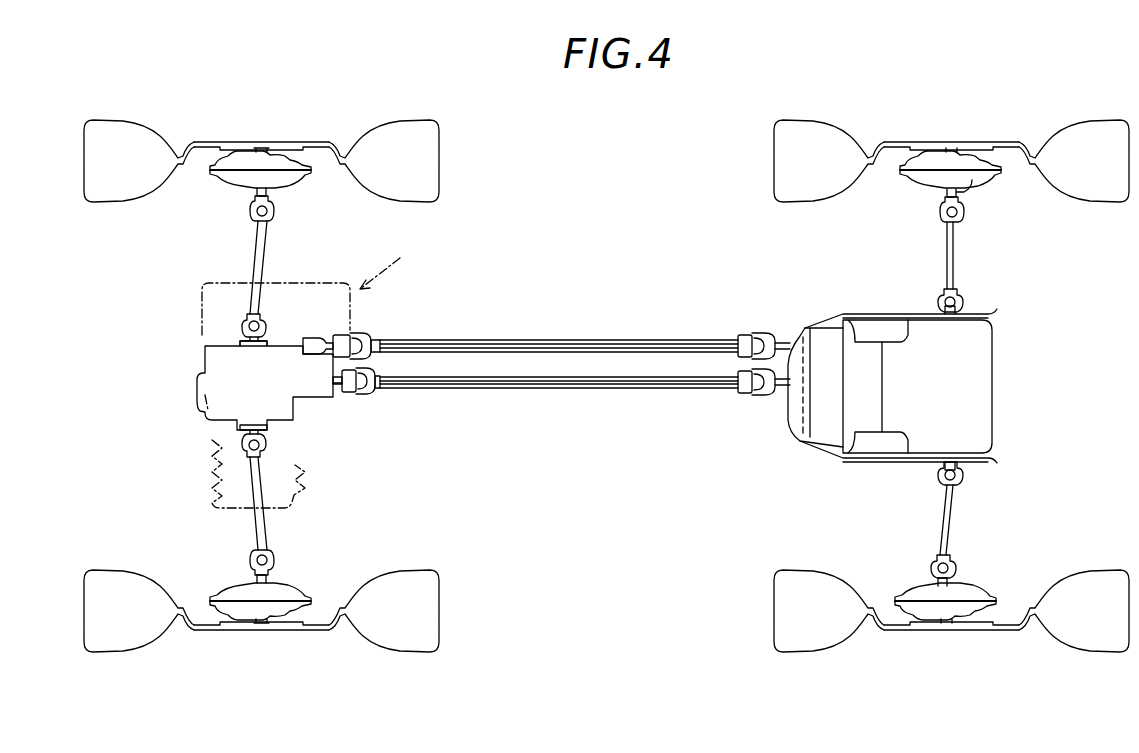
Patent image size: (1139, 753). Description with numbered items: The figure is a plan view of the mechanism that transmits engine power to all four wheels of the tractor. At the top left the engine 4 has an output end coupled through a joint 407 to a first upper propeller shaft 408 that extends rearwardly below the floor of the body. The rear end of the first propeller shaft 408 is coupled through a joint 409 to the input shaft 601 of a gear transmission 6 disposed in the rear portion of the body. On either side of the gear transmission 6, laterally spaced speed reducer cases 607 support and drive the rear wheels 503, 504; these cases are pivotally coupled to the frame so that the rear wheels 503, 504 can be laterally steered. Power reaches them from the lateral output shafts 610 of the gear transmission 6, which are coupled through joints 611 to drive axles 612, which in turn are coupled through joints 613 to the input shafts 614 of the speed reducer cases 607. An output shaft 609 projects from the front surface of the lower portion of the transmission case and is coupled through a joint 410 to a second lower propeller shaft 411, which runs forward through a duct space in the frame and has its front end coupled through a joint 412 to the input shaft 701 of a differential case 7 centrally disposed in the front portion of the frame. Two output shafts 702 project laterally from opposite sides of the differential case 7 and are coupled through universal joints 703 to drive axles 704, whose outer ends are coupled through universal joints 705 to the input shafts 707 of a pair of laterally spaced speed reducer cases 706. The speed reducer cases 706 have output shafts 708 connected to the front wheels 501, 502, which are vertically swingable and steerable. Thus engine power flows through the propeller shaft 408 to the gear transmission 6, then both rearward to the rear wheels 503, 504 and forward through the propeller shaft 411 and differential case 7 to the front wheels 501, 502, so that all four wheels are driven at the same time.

The engine 4 is at (308, 373).
The gear transmission 6 is at (988, 404).
The differential case 7 is at (231, 400).
The joint 407 is at (362, 334).
The first upper propeller shaft 408 is at (549, 344).
The joint 409 is at (752, 334).
The joint 410 is at (757, 396).
The second lower propeller shaft 411 is at (546, 388).
The joint 412 is at (360, 395).
The front wheel 501 is at (405, 580).
The front wheel 502 is at (410, 140).
The rear wheel 503 is at (1078, 592).
The rear wheel 504 is at (1103, 140).
The input shaft 601 is at (788, 342).
The speed reducer case 607 is at (926, 162).
The output shaft 609 is at (786, 390).
The lateral output shaft 610 is at (955, 320).
The joint 611 is at (962, 300).
The drive axle 612 is at (954, 262).
The joint 613 is at (940, 212).
The input shaft 614 is at (966, 195).
The input shaft 701 is at (330, 388).
The output shaft 702 is at (192, 442).
The universal joint 703 is at (238, 322).
The drive axle 704 is at (262, 258).
The universal joint 705 is at (250, 212).
The speed reducer case 706 is at (232, 165).
The input shaft 707 is at (268, 193).
The output shaft 708 is at (270, 148).